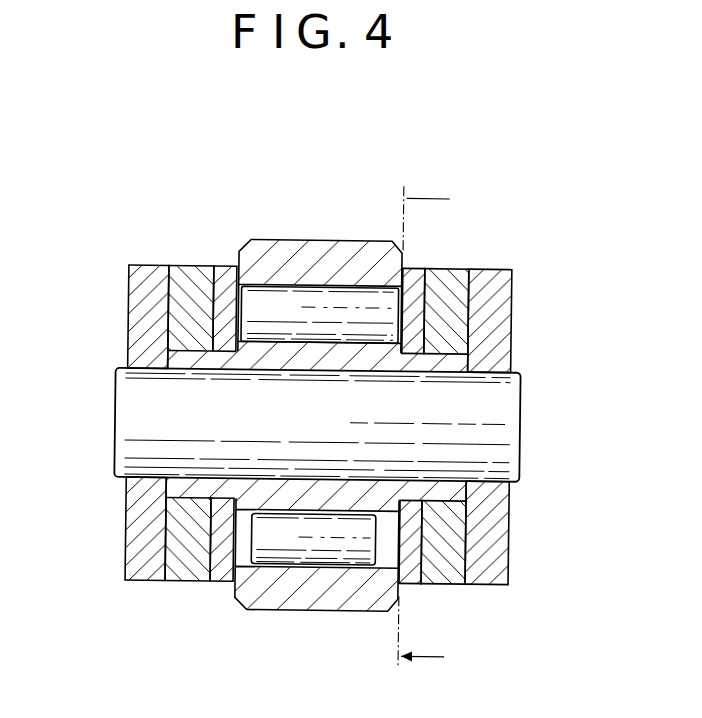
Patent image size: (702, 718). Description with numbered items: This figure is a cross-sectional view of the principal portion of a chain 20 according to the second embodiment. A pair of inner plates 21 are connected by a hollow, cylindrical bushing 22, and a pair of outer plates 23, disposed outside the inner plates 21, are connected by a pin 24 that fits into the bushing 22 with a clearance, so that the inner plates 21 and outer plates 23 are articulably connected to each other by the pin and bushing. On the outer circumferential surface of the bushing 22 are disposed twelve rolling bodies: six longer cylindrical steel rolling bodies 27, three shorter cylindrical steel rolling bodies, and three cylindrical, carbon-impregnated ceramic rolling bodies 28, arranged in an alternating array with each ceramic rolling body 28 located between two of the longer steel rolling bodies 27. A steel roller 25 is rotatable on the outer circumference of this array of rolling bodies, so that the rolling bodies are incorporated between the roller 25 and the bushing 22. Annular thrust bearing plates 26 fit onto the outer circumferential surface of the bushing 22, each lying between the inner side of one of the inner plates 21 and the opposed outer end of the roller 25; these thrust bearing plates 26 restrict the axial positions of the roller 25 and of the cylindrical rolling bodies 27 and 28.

The chain 20 is at (147, 211).
The inner plates 21 is at (189, 584).
The bushing 22 is at (300, 363).
The outer plates 23 is at (140, 583).
The pin 24 is at (498, 412).
The roller 25 is at (280, 237).
The thrust bearing plates 26 is at (225, 268).
The cylindrical steel rolling bodies 27 is at (298, 542).
The ceramic rolling bodies 28 is at (330, 295).